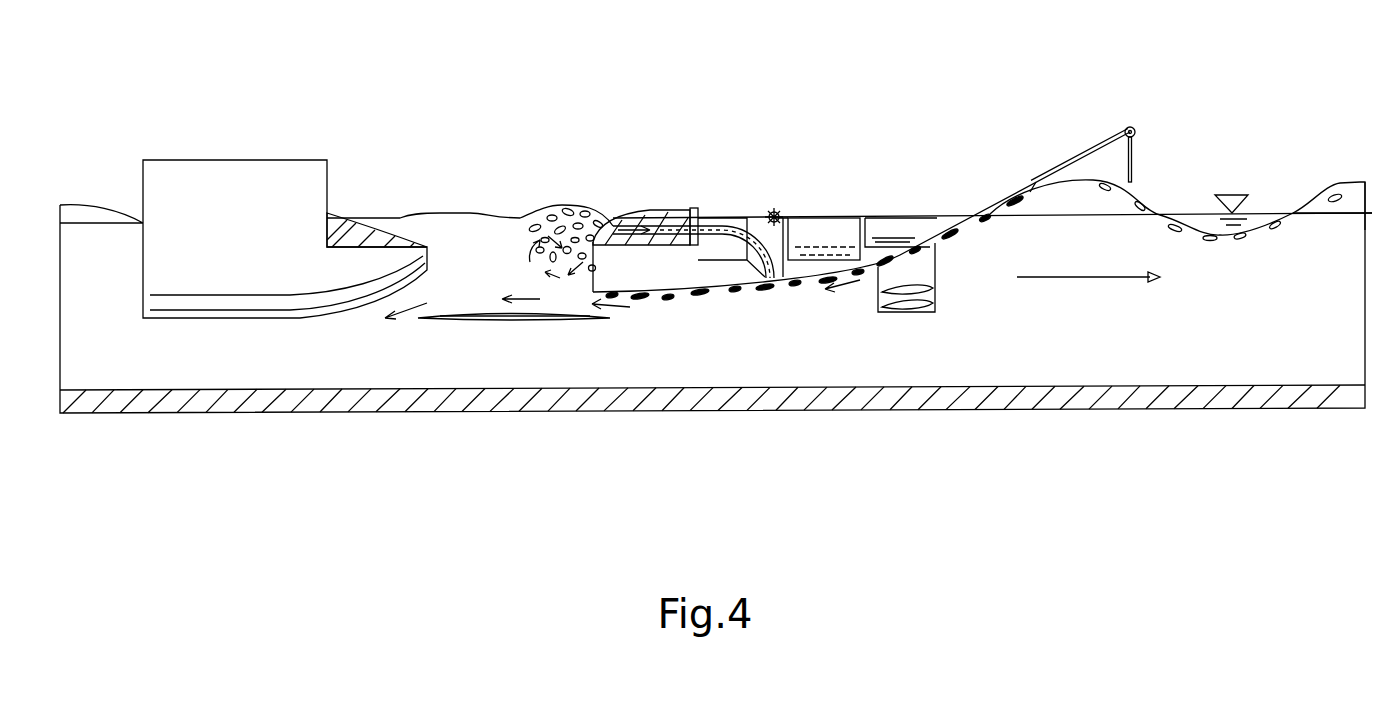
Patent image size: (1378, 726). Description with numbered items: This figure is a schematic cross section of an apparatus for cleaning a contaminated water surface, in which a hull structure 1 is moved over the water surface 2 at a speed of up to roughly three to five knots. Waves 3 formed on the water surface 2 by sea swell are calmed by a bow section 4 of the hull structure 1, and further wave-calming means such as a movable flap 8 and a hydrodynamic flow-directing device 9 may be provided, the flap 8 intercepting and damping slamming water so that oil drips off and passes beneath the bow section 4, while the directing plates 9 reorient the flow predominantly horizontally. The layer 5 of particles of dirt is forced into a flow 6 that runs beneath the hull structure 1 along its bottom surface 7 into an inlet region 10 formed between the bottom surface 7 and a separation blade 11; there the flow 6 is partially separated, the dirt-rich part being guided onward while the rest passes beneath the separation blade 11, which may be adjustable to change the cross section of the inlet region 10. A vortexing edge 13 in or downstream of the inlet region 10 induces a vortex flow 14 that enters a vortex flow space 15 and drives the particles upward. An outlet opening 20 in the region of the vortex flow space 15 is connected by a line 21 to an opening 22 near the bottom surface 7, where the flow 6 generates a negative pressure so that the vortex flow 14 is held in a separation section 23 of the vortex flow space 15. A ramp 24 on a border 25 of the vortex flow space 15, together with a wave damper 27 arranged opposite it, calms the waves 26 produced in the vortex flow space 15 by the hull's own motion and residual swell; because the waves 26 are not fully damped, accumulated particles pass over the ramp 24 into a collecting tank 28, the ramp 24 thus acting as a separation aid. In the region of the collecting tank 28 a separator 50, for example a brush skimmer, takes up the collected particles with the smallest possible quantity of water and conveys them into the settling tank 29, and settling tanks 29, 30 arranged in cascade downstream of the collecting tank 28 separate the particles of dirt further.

The hull structure 1 is at (1052, 185).
The water surface 2 is at (1343, 182).
The waves 3 is at (1303, 213).
The bow section 4 is at (1052, 215).
The layer of particles of dirt 5 is at (1165, 216).
The flow 6 is at (837, 290).
The bottom surface 7 is at (722, 290).
The flap 8 is at (1137, 162).
The hydrodynamic flow-directing device 9 is at (887, 313).
The inlet region 10 is at (595, 288).
The separation blade 11 is at (480, 313).
The vortexing edge 13 is at (575, 283).
The vortex flow 14 is at (508, 300).
The vortex flow space 15 is at (477, 248).
The outlet opening 20 is at (610, 223).
The line 21 is at (768, 212).
The opening 22 is at (768, 285).
The separation section 23 is at (565, 222).
The ramp 24 is at (675, 223).
The border 25 is at (593, 300).
The waves 26 is at (455, 218).
The wave damper 27 is at (353, 230).
The collecting tank 28 is at (730, 222).
The settling tank 29 is at (840, 228).
The settling tank 30 is at (917, 223).
The separator 50 is at (838, 223).